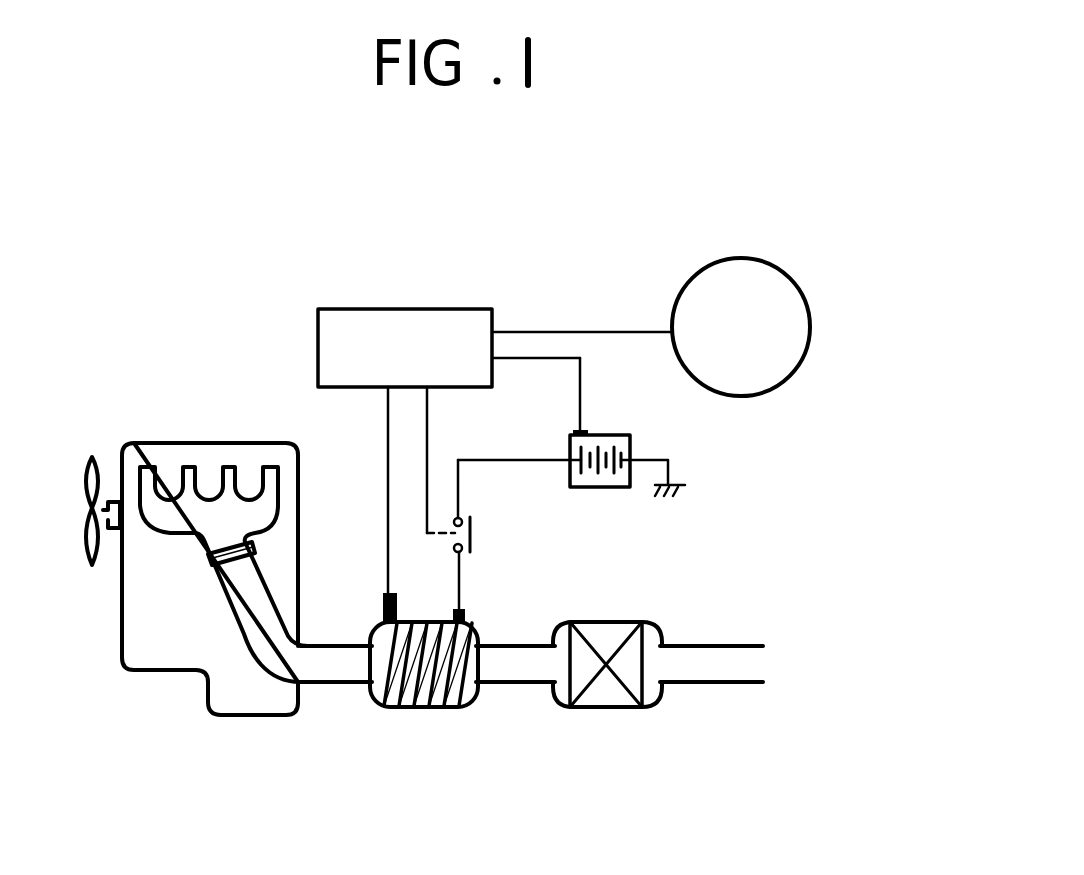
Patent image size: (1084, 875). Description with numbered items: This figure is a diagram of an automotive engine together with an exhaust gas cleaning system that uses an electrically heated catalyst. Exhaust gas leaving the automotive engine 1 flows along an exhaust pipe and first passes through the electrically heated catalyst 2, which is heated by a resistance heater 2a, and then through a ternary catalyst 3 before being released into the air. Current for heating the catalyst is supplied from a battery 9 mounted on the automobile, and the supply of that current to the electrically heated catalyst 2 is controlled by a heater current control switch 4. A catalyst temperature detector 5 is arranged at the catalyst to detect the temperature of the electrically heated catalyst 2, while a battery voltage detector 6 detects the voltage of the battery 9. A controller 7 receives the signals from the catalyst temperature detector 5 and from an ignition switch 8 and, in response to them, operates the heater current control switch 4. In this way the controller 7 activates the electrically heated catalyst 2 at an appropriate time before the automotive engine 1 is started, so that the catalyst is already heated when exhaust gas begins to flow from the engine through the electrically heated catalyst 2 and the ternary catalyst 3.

The automotive engine 1 is at (240, 443).
The electrically heated catalyst 2 is at (436, 710).
The resistance heater 2a is at (470, 636).
The ternary catalyst 3 is at (615, 708).
The heater current control switch 4 is at (465, 515).
The catalyst temperature detector 5 is at (383, 606).
The battery voltage detector 6 is at (585, 430).
The controller 7 is at (406, 309).
The ignition switch 8 is at (744, 397).
The battery 9 is at (610, 488).